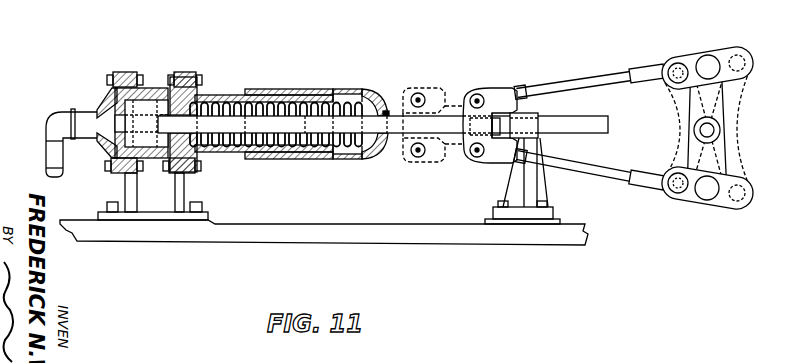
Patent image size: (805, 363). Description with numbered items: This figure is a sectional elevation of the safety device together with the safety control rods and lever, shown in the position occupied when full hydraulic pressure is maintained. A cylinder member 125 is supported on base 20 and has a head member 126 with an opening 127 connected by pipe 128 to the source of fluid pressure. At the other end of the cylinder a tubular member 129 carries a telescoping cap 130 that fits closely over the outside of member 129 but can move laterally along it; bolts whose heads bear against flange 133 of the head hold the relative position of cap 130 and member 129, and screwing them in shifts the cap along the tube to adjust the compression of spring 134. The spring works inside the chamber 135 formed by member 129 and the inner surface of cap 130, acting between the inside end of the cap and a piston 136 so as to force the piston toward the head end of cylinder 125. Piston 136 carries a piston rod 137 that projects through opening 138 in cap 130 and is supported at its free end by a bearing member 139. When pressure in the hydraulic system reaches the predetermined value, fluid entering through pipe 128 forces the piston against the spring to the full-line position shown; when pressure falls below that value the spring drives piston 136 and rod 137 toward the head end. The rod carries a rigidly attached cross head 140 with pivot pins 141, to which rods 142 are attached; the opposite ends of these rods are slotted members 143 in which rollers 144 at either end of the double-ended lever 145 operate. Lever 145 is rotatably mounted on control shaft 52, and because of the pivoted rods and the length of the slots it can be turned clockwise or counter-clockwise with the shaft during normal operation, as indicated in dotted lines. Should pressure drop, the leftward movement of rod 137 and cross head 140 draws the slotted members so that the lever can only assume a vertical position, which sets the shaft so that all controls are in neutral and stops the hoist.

The base 20 is at (324, 232).
The control shaft 52 is at (719, 130).
The cylinder member 125 is at (141, 88).
The head member 126 is at (104, 108).
The opening 127 is at (96, 124).
The pipe 128 is at (55, 125).
The tubular member 129 is at (214, 99).
The telescoping cap 130 is at (308, 92).
The flange 133 is at (115, 172).
The spring 134 is at (271, 90).
The chamber 135 is at (364, 90).
The piston 136 is at (198, 86).
The piston rod 137 is at (383, 124).
The opening 138 is at (387, 111).
The bearing member 139 is at (531, 114).
The cross head 140 is at (457, 150).
The pivot pins 141 is at (481, 95).
The rods 142 is at (553, 88).
The slotted members 143 is at (680, 63).
The rollers 144 is at (725, 60).
The double-ended lever 145 is at (719, 163).